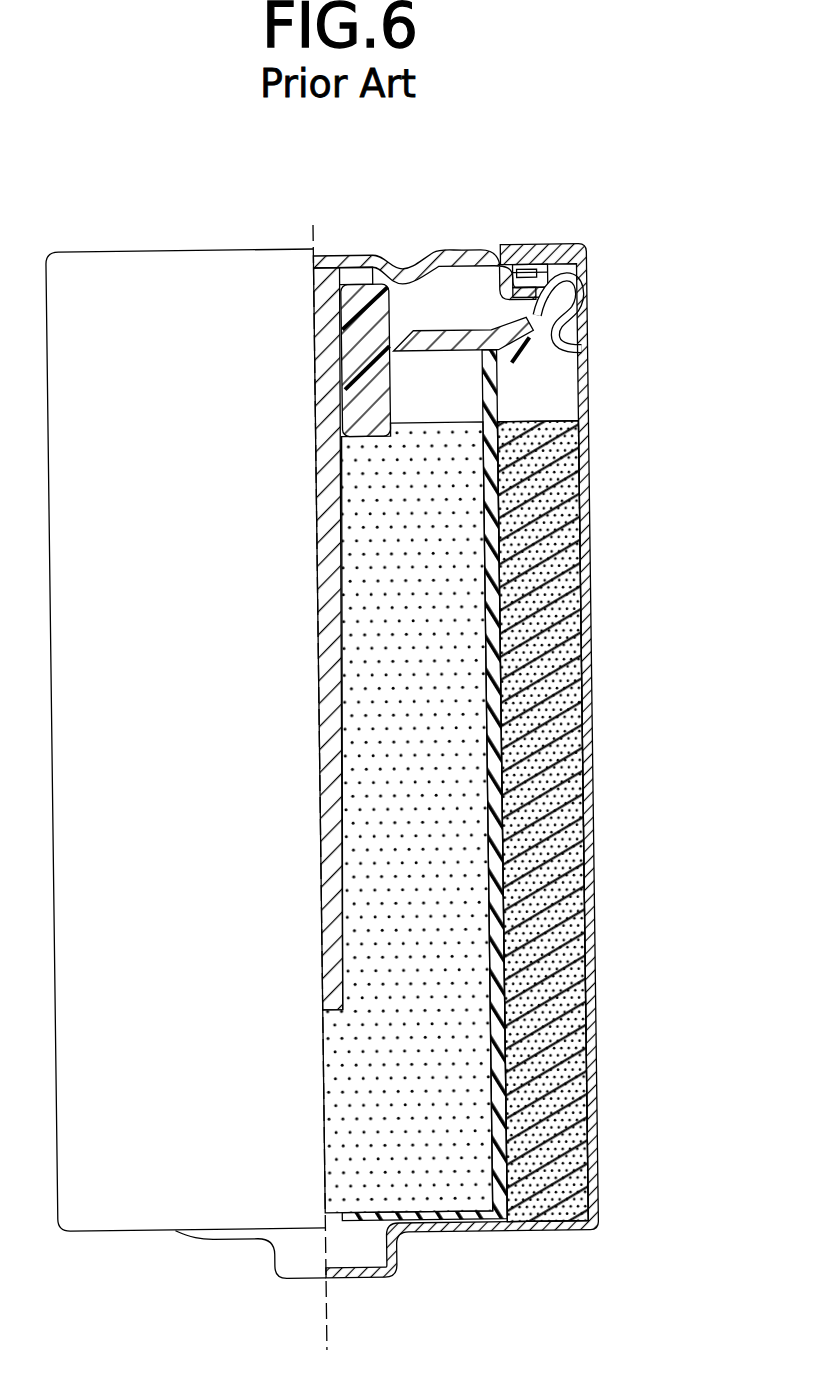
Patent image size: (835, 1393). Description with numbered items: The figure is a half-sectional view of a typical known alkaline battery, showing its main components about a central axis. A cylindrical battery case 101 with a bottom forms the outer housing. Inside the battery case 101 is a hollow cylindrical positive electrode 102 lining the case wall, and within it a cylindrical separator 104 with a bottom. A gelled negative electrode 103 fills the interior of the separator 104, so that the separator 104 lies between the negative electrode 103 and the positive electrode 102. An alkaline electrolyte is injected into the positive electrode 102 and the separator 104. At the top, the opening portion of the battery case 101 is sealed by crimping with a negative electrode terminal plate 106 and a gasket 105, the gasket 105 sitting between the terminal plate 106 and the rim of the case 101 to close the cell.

The battery case 101 is at (590, 655).
The positive electrode 102 is at (560, 740).
The gelled negative electrode 103 is at (450, 573).
The separator 104 is at (492, 805).
The gasket 105 is at (354, 295).
The negative electrode terminal plate 106 is at (470, 257).